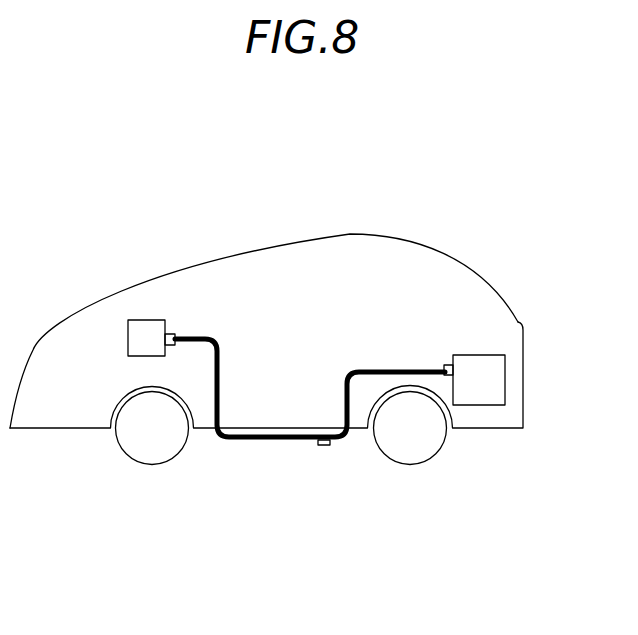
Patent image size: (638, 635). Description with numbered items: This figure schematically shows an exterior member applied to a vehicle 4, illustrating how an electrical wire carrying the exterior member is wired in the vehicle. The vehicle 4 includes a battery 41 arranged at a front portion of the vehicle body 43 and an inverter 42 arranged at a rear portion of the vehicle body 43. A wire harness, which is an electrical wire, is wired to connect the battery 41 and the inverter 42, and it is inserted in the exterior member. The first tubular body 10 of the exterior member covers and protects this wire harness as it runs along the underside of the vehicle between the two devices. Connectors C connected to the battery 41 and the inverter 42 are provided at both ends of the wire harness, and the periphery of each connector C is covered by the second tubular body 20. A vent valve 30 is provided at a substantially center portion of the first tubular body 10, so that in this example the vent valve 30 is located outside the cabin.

The vehicle 4 is at (266, 302).
The vehicle body 43 is at (470, 265).
The battery 41 is at (145, 320).
The inverter 42 is at (484, 354).
The first tubular body 10 is at (313, 405).
The second tubular body 20 is at (177, 338).
The vent valve 30 is at (323, 448).
The connector C is at (171, 334).